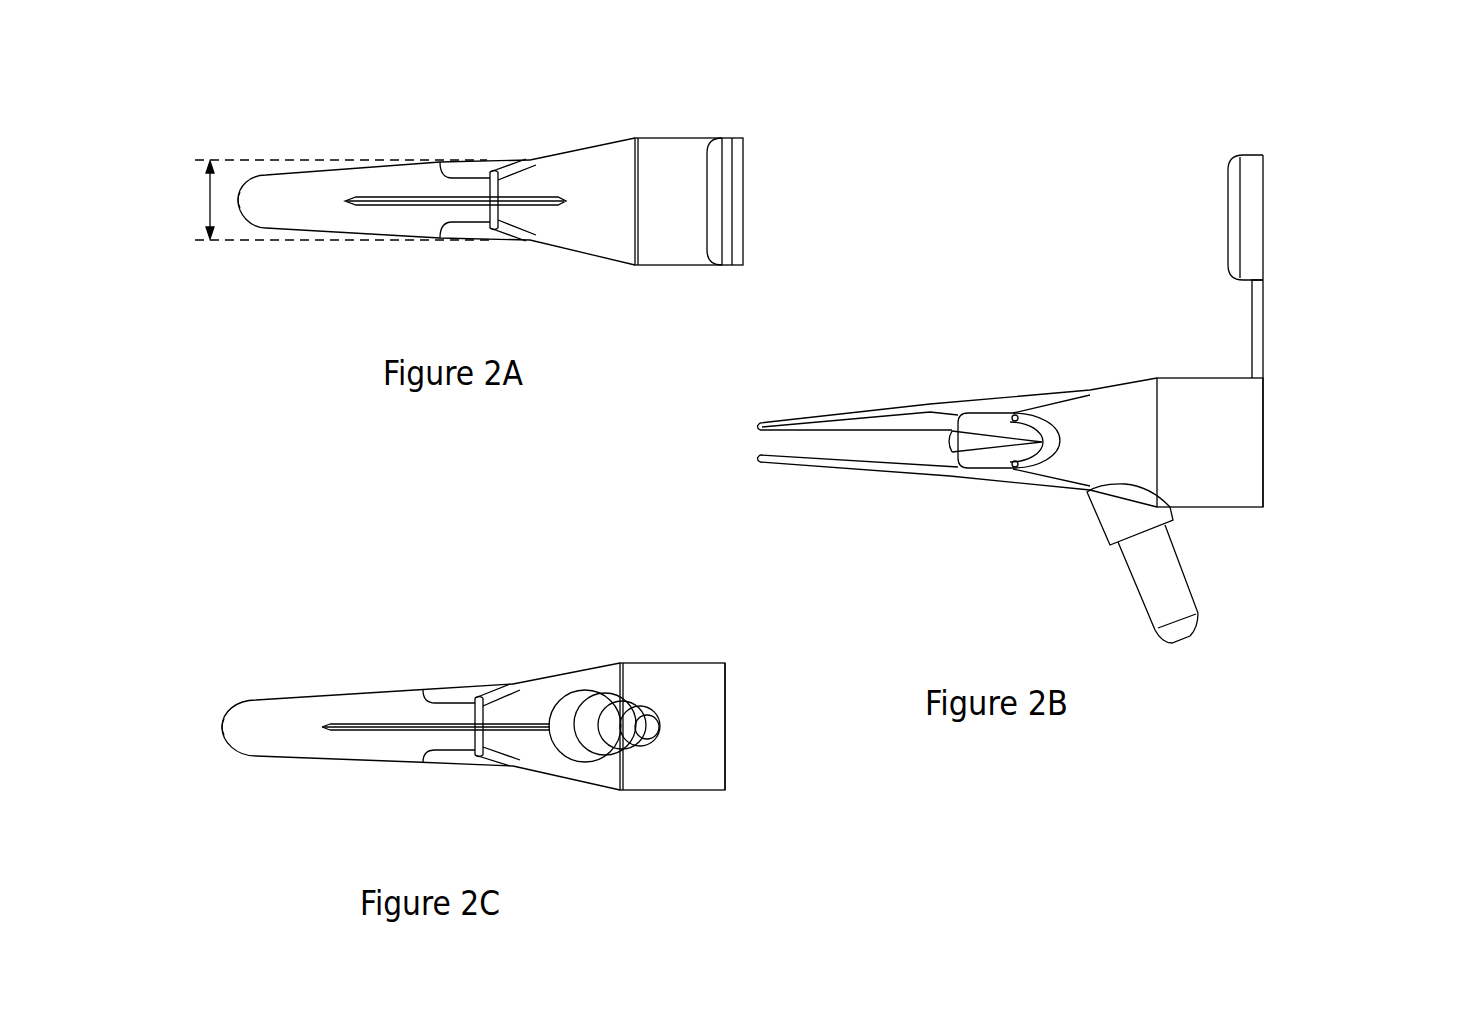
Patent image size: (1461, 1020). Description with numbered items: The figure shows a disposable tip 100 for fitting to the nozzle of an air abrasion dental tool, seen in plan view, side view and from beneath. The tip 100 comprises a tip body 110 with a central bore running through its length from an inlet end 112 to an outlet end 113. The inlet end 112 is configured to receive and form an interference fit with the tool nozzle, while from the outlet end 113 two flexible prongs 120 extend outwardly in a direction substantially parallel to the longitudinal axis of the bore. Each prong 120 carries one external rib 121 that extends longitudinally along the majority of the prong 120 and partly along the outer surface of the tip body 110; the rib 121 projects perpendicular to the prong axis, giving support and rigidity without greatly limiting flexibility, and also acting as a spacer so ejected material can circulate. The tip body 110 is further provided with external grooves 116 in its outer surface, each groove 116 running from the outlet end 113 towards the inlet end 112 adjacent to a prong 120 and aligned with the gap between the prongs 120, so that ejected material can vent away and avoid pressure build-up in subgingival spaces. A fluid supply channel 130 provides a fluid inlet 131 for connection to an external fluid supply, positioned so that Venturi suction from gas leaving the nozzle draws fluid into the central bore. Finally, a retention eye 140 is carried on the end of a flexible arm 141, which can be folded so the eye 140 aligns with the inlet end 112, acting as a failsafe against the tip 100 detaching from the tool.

In FIG. 2A, the disposable tip 100 is at (756, 89).
In FIG. 2B, the disposable tip 100 is at (1018, 296).
In FIG. 2C, the disposable tip 100 is at (384, 621).
In FIG. 2A, the tip body 110 is at (612, 165).
In FIG. 2B, the tip body 110 is at (1115, 410).
In FIG. 2C, the tip body 110 is at (633, 675).
In FIG. 2A, the inlet end 112 is at (742, 195).
In FIG. 2B, the inlet end 112 is at (1265, 450).
In FIG. 2C, the inlet end 112 is at (724, 727).
In FIG. 2B, the outlet end 113 is at (950, 447).
In FIG. 2A, the external groove 116 is at (478, 160).
In FIG. 2B, the external groove 116 is at (978, 443).
In FIG. 2C, the external groove 116 is at (457, 690).
In FIG. 2A, the flexible prong 120 is at (305, 195).
In FIG. 2B, the flexible prong 120 is at (850, 460).
In FIG. 2C, the flexible prong 120 is at (288, 728).
In FIG. 2A, the external rib 121 is at (408, 200).
In FIG. 2B, the external rib 121 is at (970, 407).
In FIG. 2B, the fluid supply channel 130 is at (1163, 592).
In FIG. 2C, the fluid supply channel 130 is at (605, 730).
In FIG. 2B, the fluid inlet 131 is at (1190, 645).
In FIG. 2C, the fluid inlet 131 is at (652, 732).
In FIG. 2B, the retention eye 140 is at (1258, 213).
In FIG. 2B, the flexible arm 141 is at (1258, 340).